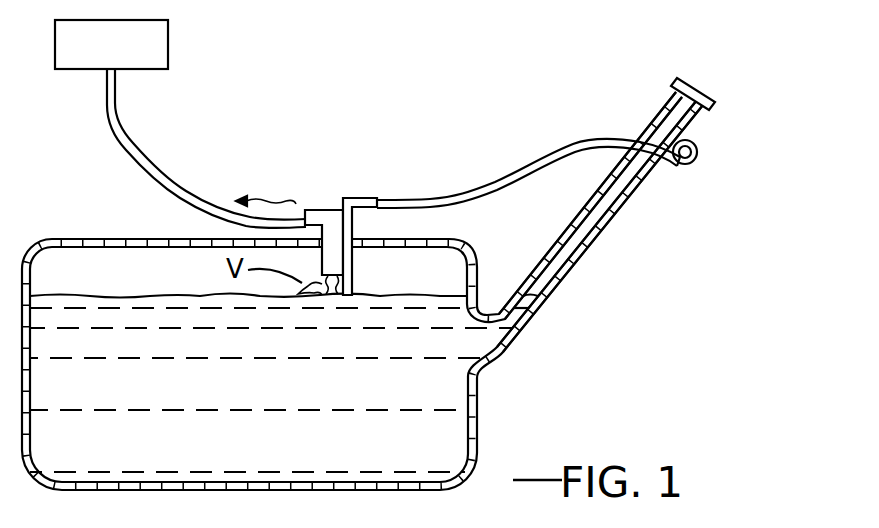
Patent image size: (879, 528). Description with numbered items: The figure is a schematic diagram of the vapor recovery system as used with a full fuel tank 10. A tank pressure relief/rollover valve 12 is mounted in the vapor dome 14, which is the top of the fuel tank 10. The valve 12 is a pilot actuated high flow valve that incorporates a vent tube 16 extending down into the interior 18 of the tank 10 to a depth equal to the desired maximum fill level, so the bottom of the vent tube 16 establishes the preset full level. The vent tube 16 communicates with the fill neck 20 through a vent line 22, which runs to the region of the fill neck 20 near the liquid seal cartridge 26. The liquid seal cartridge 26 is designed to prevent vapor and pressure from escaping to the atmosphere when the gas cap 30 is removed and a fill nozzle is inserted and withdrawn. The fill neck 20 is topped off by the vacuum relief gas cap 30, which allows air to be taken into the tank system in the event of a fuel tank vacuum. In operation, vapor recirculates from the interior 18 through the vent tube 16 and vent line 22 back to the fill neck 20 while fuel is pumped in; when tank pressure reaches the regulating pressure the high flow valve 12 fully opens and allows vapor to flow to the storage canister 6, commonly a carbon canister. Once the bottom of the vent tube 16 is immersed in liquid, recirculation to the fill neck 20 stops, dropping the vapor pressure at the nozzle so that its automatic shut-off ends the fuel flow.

The storage canister 6 is at (149, 40).
The fuel tank 10 is at (490, 402).
The tank pressure relief/rollover valve 12 is at (323, 197).
The vapor dome 14 is at (68, 270).
The vent tube 16 is at (360, 197).
The interior of the fuel tank 18 is at (259, 456).
The fill neck 20 is at (640, 204).
The vent line 22 is at (524, 176).
The liquid seal cartridge 26 is at (684, 122).
The vacuum relief gas cap 30 is at (697, 86).